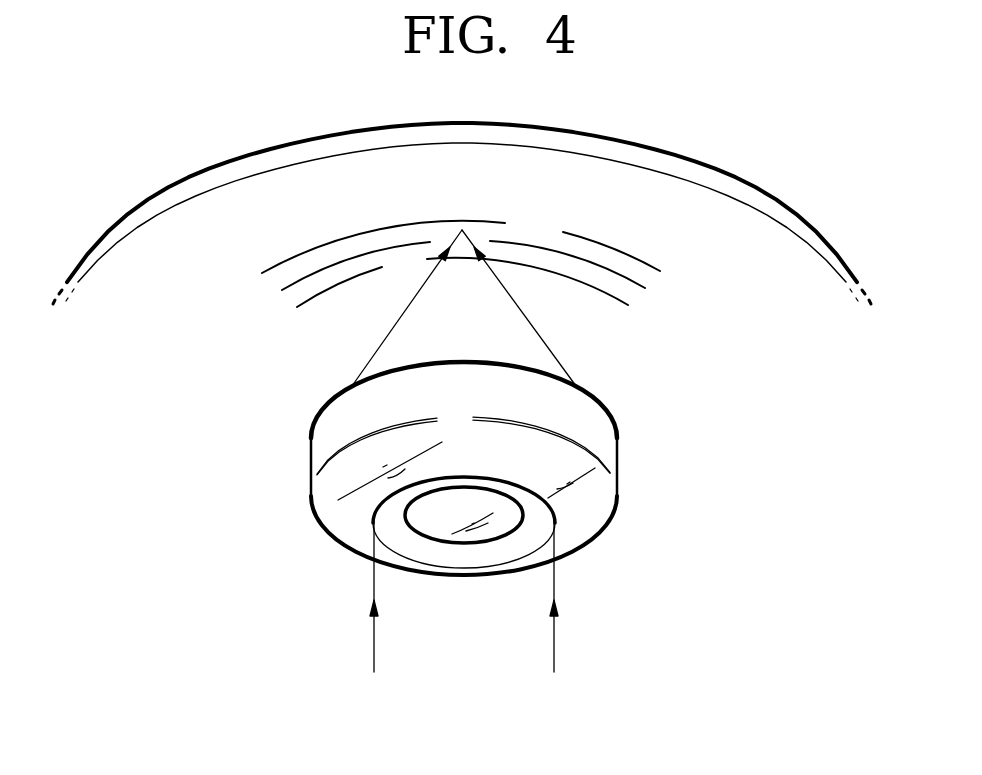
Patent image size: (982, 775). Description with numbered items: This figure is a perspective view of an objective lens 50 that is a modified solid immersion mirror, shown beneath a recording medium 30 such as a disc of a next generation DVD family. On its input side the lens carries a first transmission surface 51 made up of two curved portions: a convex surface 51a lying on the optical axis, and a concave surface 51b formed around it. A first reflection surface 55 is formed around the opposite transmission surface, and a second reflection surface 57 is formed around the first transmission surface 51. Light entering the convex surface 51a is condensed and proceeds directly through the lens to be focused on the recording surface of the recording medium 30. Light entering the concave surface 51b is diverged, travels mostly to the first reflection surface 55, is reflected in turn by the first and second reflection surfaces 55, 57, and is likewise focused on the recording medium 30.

The recording medium 30 is at (755, 213).
The objective lens 50 is at (290, 415).
The first reflection surface 55 is at (352, 392).
The second reflection surface 57 is at (582, 518).
The first transmission surface 51 is at (464, 605).
The convex surface 51a is at (495, 528).
The concave surface 51b is at (443, 555).